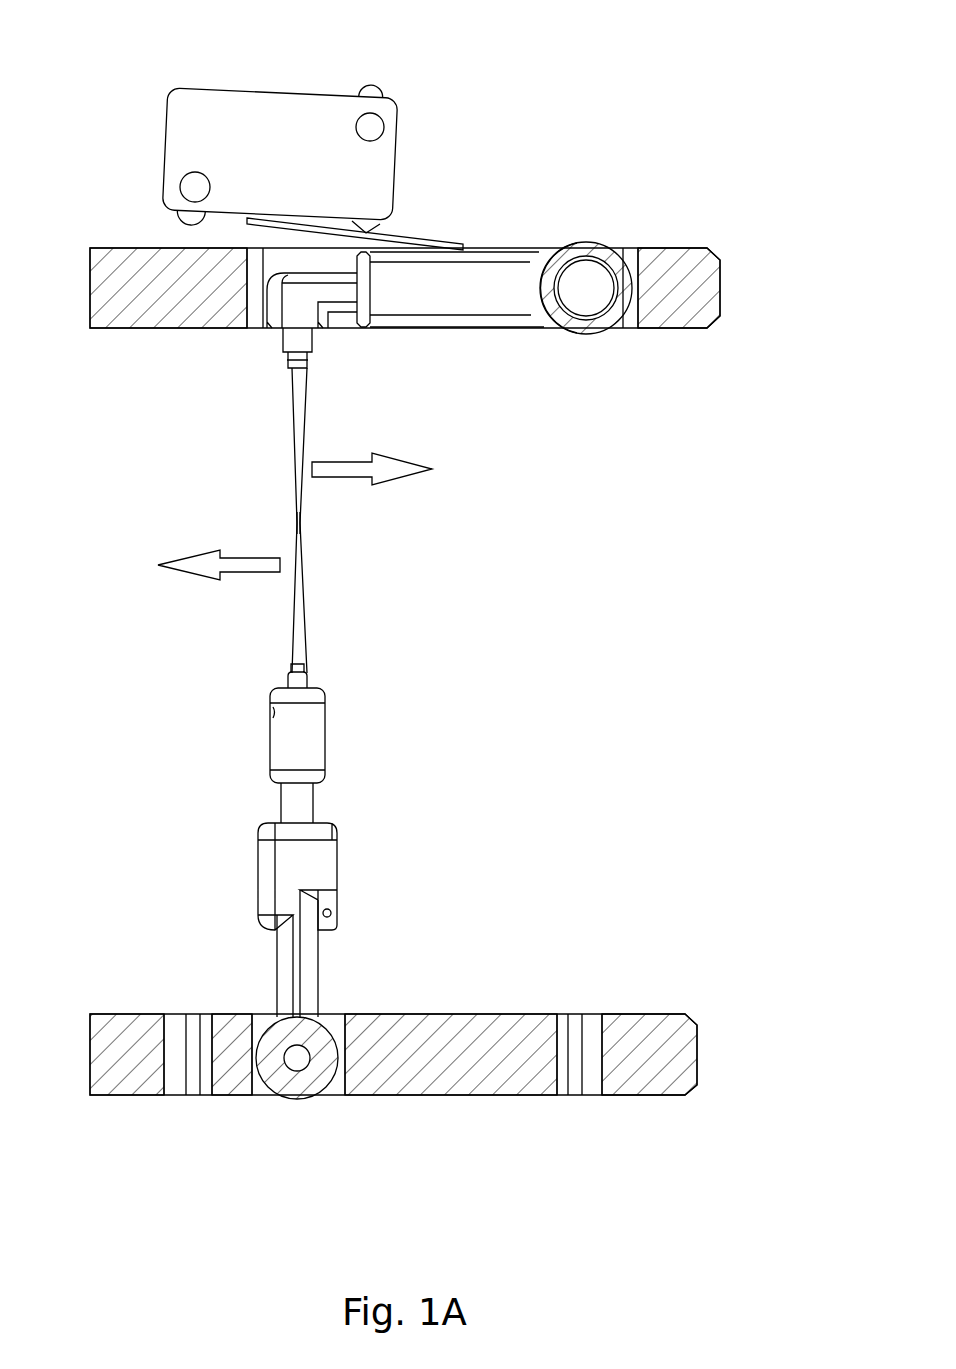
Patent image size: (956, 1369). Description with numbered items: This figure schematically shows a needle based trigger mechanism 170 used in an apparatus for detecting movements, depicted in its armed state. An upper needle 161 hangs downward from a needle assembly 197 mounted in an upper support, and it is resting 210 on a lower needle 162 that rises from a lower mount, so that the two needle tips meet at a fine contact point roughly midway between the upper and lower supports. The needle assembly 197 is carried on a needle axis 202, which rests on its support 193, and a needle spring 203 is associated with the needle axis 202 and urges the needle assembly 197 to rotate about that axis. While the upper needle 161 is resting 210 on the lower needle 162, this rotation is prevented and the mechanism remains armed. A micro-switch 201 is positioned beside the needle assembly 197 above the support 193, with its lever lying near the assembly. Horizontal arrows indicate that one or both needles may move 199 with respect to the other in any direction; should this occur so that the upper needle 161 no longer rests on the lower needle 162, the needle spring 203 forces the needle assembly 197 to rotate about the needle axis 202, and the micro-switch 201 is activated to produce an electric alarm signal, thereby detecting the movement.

The needle based trigger mechanism 170 is at (660, 82).
The support 193 is at (123, 328).
The needle assembly 197 is at (467, 318).
The needle movement 199 is at (343, 464).
The micro-switch 201 is at (395, 157).
The needle axis 202 is at (588, 262).
The needle spring 203 is at (592, 335).
The upper needle 161 is at (295, 412).
The resting contact 210 is at (299, 521).
The lower needle 162 is at (301, 626).